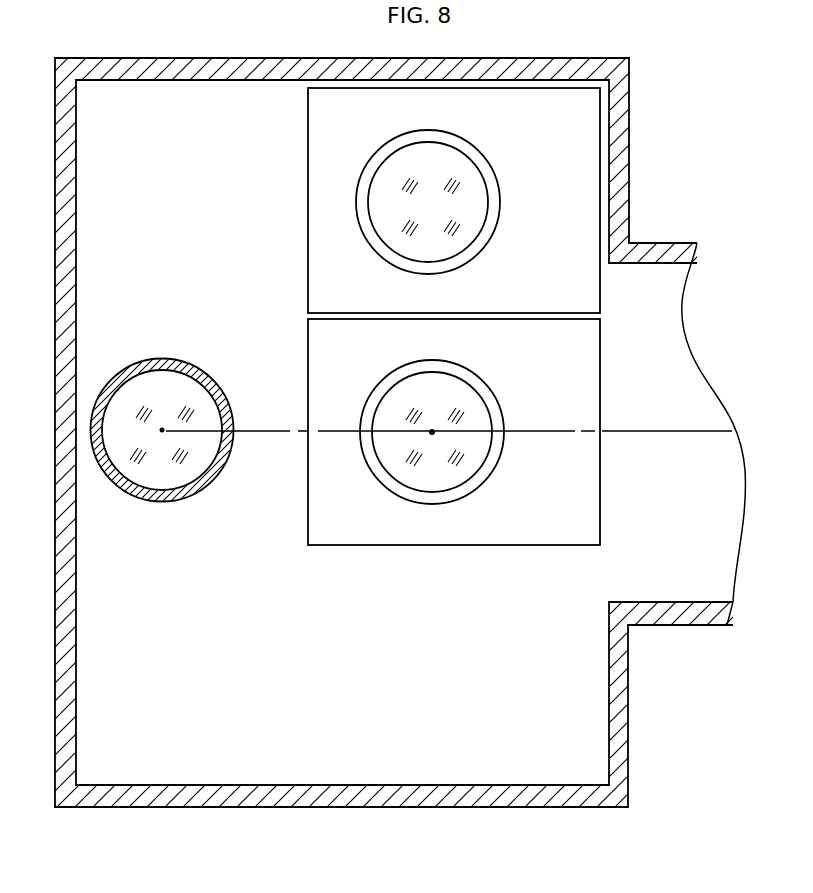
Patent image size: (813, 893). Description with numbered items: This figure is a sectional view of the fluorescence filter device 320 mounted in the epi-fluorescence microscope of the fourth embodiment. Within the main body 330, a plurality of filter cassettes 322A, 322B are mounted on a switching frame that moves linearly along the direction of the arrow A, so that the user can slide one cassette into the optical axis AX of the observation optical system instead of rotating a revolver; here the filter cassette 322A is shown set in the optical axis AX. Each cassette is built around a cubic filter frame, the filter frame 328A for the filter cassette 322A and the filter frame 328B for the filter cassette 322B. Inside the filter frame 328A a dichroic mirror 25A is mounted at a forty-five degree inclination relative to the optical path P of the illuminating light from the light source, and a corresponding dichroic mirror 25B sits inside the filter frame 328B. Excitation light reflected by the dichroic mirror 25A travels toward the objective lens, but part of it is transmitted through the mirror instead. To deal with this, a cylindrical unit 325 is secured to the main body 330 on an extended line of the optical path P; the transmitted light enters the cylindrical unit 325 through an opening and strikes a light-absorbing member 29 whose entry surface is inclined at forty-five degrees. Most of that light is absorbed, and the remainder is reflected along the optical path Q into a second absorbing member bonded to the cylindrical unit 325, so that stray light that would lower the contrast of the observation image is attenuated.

The fluorescence filter device 320 is at (678, 107).
The main body 330 is at (630, 184).
The filter cassette 322B is at (369, 200).
The filter frame 328B is at (401, 200).
The dichroic mirror 25B is at (472, 192).
The filter cassette 322A is at (459, 460).
The filter frame 328A is at (498, 454).
The dichroic mirror 25A is at (438, 475).
The optical axis AX is at (432, 432).
The cylindrical unit 325 is at (162, 421).
The light-absorbing member 29 is at (158, 472).
The optical path Q is at (162, 430).
The optical path P is at (686, 432).
The arrow A is at (433, 625).